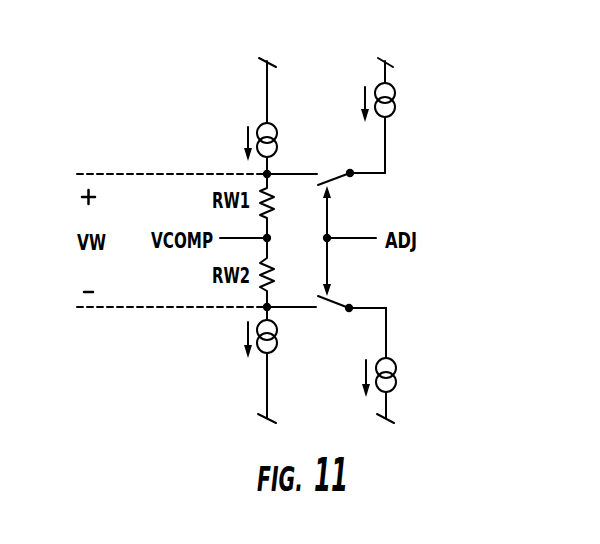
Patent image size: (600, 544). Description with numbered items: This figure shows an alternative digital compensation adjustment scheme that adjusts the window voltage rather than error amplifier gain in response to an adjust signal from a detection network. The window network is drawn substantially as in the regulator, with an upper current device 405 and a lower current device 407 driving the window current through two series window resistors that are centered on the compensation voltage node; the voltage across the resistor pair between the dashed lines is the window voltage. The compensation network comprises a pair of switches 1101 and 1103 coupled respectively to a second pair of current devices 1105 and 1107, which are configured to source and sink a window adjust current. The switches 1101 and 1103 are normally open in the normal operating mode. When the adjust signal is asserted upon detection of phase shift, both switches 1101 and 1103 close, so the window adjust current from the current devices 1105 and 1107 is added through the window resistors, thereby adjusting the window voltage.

The current device 405 is at (276, 126).
The current device 407 is at (275, 350).
The switch 1101 is at (352, 175).
The switch 1103 is at (351, 306).
The current device 1105 is at (393, 88).
The current device 1107 is at (393, 391).